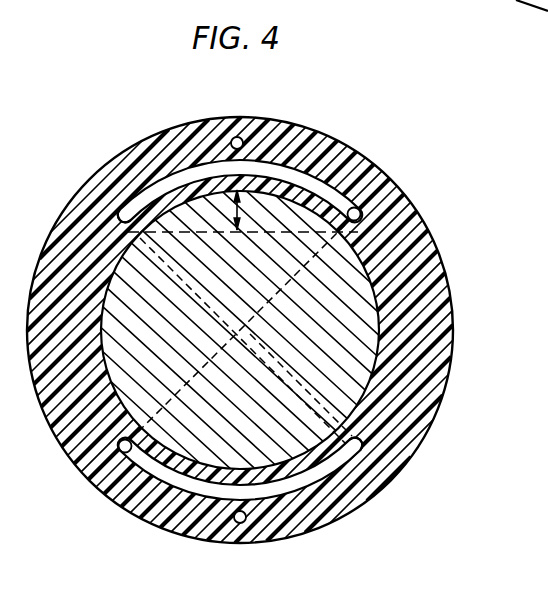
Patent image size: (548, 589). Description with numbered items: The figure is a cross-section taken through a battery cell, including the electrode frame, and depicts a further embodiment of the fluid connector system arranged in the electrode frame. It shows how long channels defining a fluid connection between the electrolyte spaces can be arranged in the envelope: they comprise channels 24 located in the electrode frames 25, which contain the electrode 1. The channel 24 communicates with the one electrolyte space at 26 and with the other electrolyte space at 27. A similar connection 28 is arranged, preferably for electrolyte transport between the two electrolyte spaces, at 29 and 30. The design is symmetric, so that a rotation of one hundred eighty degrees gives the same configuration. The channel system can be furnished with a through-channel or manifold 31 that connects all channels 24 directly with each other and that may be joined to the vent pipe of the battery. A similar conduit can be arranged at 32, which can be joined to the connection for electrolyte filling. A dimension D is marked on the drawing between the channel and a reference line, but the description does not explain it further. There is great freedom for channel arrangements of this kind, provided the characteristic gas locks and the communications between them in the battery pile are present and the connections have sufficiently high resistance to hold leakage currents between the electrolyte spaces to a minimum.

The electrode 1 is at (354, 384).
The channels 24 is at (335, 192).
The electrode frame 25 is at (428, 307).
The communication with one electrolyte space 26 is at (127, 212).
The communication with the other electrolyte space 27 is at (362, 223).
The connection for electrolyte transport 28 is at (294, 490).
The electrolyte space connection point 29 is at (349, 450).
The electrolyte space connection point 30 is at (123, 452).
The through-channel or manifold 31 is at (240, 137).
The conduit 32 is at (240, 524).
The depth dimension D is at (238, 191).